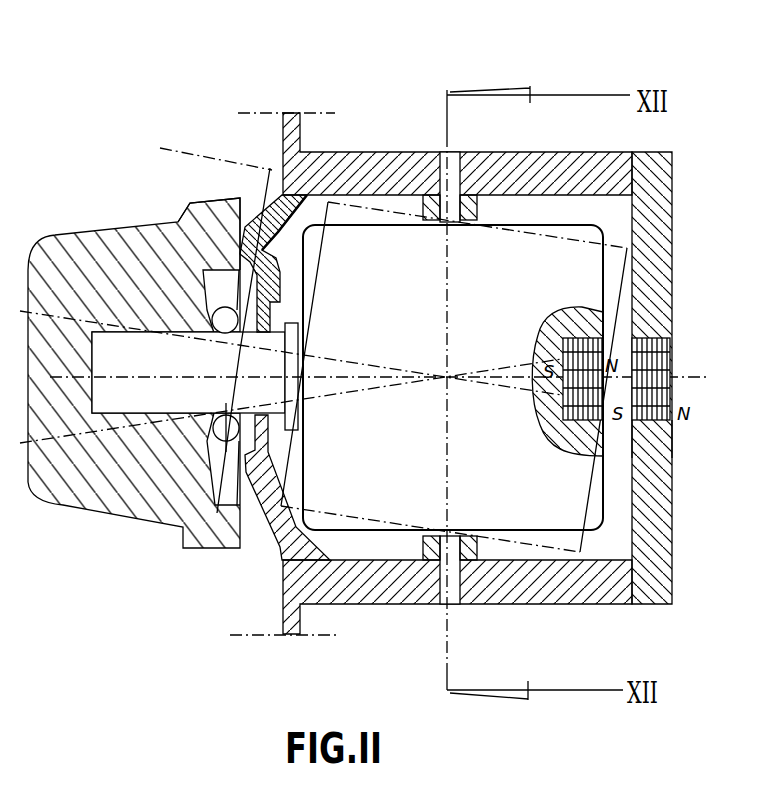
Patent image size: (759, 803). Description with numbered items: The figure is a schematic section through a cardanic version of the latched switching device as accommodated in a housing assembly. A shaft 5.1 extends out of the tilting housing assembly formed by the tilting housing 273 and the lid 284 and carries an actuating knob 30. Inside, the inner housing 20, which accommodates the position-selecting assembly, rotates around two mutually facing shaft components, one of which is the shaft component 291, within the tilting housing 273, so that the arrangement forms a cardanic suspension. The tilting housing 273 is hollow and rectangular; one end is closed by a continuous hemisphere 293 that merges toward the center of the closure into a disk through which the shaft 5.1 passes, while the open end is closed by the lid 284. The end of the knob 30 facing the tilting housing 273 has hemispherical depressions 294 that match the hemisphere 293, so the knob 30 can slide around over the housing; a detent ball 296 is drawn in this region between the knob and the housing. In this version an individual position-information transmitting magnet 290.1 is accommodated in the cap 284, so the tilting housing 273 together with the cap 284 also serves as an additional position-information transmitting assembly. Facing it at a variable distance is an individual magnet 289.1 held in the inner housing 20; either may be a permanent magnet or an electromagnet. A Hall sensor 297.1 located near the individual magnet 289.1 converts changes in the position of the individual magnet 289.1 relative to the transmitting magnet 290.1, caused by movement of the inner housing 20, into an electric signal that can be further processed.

The actuating knob 30 is at (87, 488).
The shaft 5.1 is at (148, 405).
The hemispherical depressions 294 is at (175, 217).
The detent ball 296 is at (224, 347).
The continuous hemisphere 293 is at (257, 533).
The tilting housing 273 is at (367, 155).
The lid 284 is at (647, 207).
The shaft component 291 is at (445, 152).
The inner housing 20 is at (585, 503).
The Hall sensor 297.1 is at (650, 427).
The individual magnet 289.1 is at (603, 356).
The individual position-information transmitting magnet 290.1 is at (660, 364).